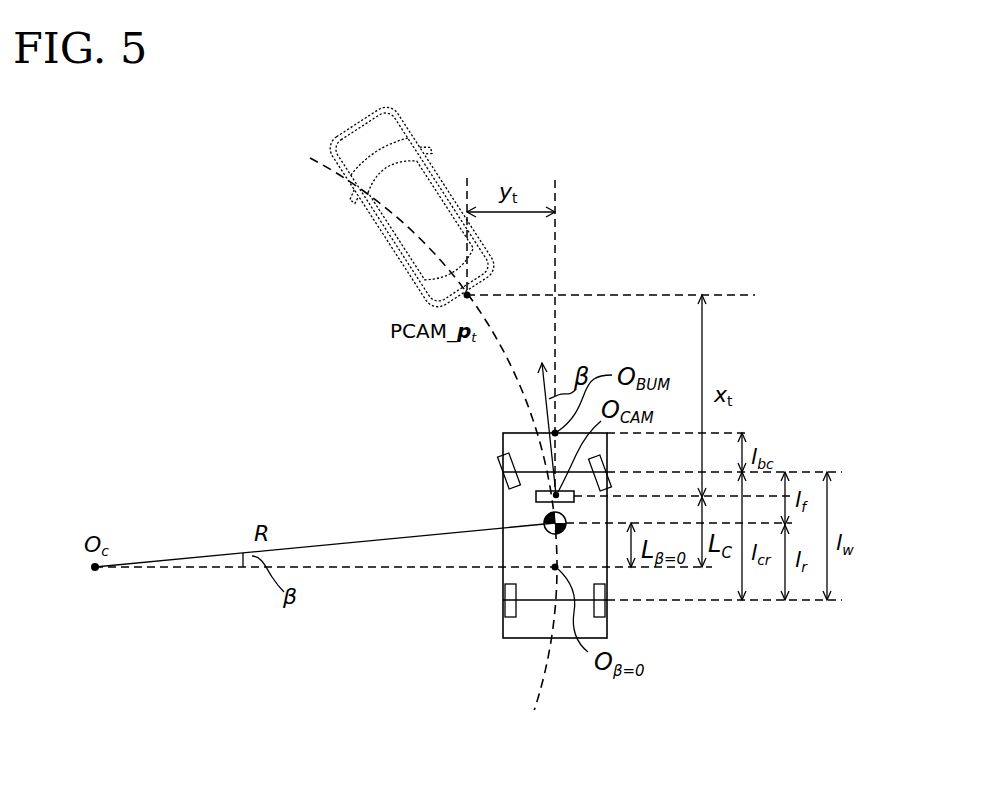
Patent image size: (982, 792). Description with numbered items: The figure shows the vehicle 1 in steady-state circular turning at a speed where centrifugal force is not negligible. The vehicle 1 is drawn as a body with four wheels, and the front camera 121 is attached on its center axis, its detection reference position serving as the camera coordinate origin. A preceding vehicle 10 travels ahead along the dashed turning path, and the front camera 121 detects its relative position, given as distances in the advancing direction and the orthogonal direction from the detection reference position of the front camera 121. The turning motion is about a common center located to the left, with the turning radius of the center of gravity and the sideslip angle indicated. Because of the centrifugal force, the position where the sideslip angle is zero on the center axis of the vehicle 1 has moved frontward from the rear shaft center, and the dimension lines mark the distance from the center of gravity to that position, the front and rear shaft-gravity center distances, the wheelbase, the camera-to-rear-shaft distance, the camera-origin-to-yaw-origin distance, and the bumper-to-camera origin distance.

The preceding vehicle 10 is at (423, 132).
The vehicle 1 is at (527, 639).
The front camera 121 is at (536, 497).